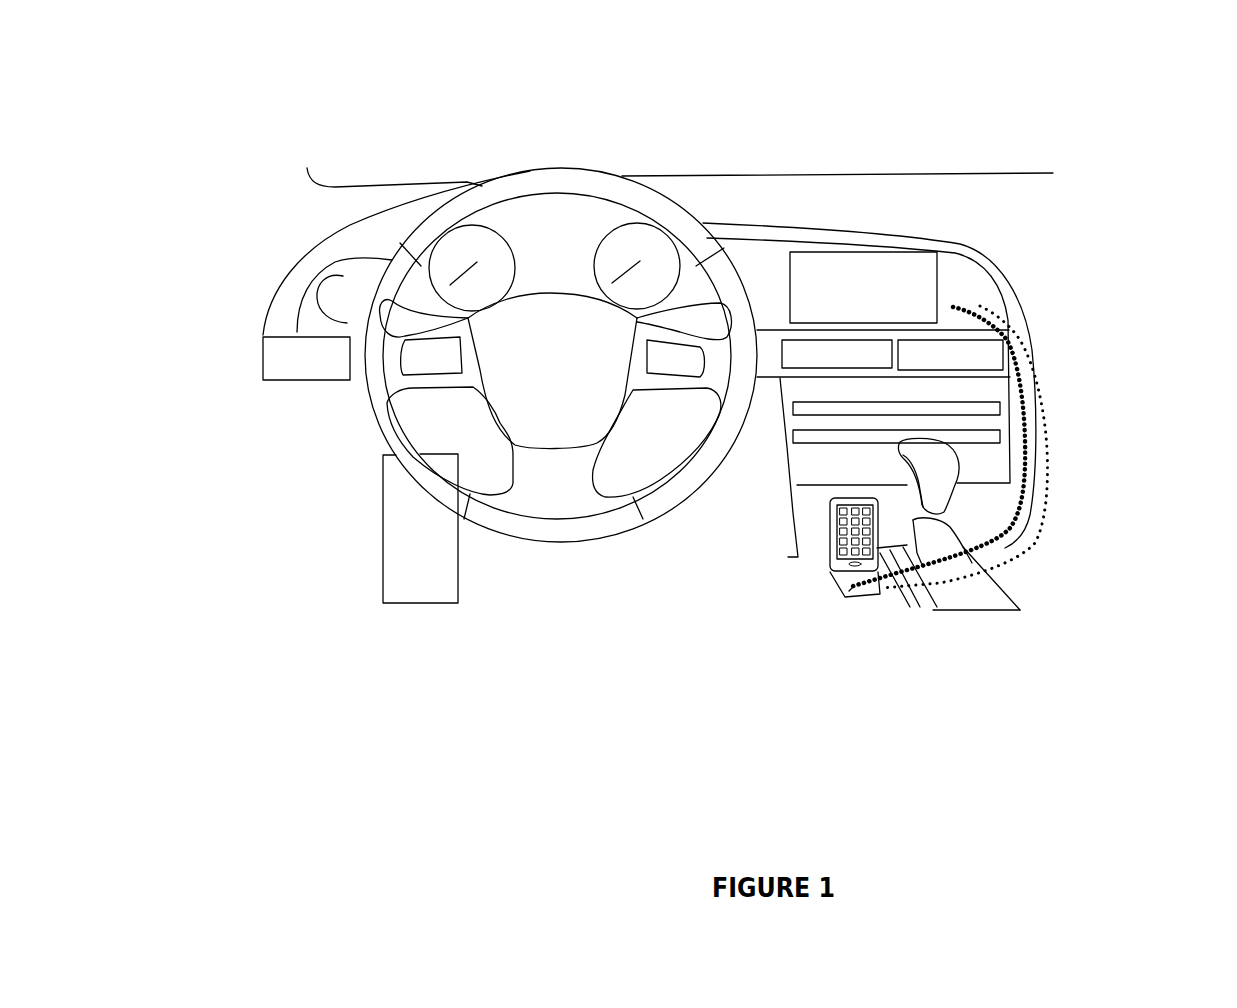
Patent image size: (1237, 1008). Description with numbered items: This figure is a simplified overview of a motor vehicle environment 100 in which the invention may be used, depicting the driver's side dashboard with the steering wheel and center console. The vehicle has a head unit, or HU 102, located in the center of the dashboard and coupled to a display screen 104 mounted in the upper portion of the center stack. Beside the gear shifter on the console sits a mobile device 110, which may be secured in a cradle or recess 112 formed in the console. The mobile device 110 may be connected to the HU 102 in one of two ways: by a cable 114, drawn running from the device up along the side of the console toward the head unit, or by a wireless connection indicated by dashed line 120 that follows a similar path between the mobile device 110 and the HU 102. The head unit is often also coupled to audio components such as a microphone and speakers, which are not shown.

The motor vehicle environment 100 is at (307, 168).
The HU 102 is at (837, 238).
The display screen 104 is at (927, 263).
The mobile device 110 is at (827, 567).
The cradle or recess 112 is at (848, 592).
The cable 114 is at (1037, 483).
The wireless connection 120 is at (1030, 362).